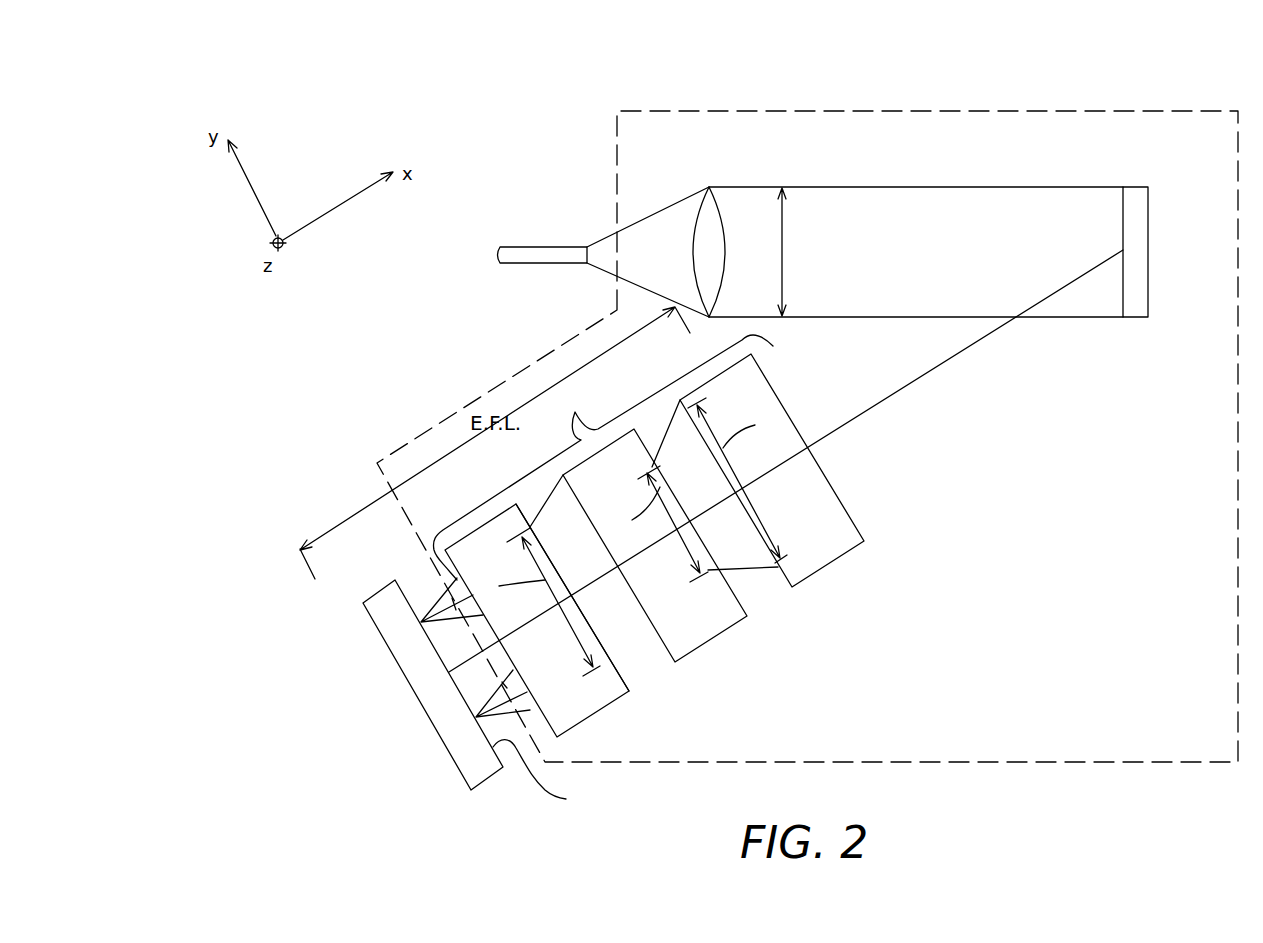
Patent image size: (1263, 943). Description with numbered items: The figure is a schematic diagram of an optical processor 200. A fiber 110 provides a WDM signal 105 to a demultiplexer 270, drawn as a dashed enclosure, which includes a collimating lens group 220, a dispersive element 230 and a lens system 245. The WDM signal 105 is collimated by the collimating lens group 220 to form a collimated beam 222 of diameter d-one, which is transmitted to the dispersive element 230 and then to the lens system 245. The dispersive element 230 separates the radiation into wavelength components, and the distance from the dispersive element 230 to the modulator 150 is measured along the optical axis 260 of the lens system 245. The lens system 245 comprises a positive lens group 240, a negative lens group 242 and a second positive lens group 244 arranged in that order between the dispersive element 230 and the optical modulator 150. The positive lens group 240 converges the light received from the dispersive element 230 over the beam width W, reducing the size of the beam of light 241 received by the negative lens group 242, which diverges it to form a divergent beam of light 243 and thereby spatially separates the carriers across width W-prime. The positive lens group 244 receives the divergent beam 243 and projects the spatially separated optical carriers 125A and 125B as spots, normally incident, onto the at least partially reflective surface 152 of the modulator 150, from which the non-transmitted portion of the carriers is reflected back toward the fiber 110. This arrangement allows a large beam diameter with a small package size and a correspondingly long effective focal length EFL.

The optical processor 200 is at (554, 98).
The demultiplexer 270 is at (1132, 100).
The WDM signal 105 is at (625, 215).
The fiber 110 is at (557, 265).
The collimating lens group 220 is at (712, 192).
The collimated beam 222 is at (908, 187).
The dispersive element 230 is at (1148, 187).
The optical axis 260 is at (908, 388).
The lens system 245 is at (603, 457).
The positive lens group 240 is at (682, 545).
The beam of light 241 is at (743, 573).
The negative lens group 242 is at (703, 645).
The divergent beam of light 243 is at (613, 650).
The positive lens group 244 is at (593, 712).
The optical carrier 125A is at (440, 580).
The optical carrier 125B is at (527, 712).
The optical modulator 150 is at (398, 689).
The at least partially reflective surface 152 is at (566, 799).